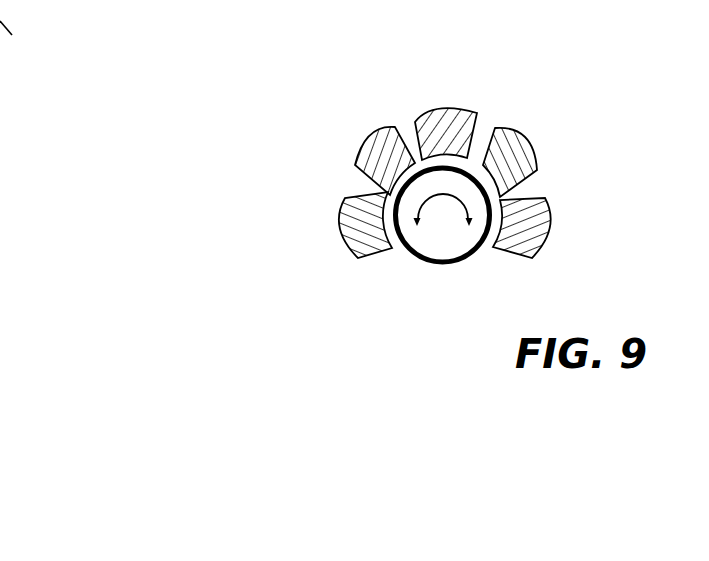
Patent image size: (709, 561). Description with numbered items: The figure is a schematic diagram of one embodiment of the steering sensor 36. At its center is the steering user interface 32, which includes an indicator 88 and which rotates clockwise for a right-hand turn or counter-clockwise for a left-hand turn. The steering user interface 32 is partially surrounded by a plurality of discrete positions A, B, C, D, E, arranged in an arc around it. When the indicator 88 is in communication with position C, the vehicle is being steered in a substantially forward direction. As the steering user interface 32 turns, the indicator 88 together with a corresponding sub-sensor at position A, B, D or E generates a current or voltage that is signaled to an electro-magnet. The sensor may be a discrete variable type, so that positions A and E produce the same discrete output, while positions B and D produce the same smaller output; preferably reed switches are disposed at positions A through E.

The steering user interface 32 is at (422, 260).
The steering sensor 36 is at (425, 132).
The indicator 88 is at (462, 189).
The discrete position A is at (345, 218).
The discrete position B is at (364, 147).
The discrete position C is at (450, 108).
The discrete position D is at (538, 146).
The discrete position E is at (553, 219).